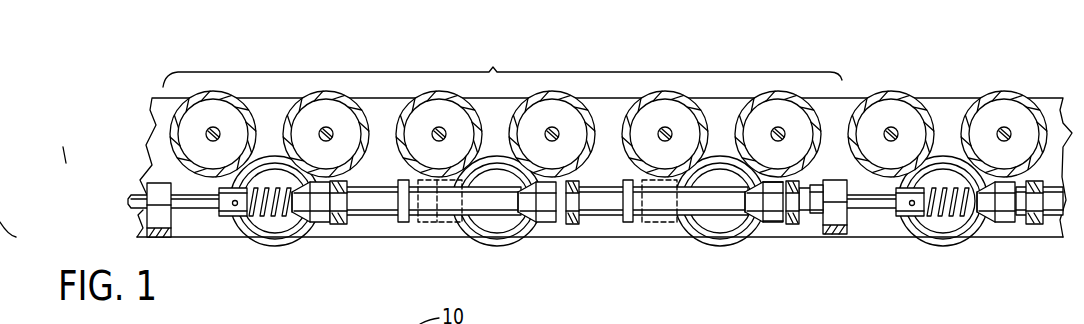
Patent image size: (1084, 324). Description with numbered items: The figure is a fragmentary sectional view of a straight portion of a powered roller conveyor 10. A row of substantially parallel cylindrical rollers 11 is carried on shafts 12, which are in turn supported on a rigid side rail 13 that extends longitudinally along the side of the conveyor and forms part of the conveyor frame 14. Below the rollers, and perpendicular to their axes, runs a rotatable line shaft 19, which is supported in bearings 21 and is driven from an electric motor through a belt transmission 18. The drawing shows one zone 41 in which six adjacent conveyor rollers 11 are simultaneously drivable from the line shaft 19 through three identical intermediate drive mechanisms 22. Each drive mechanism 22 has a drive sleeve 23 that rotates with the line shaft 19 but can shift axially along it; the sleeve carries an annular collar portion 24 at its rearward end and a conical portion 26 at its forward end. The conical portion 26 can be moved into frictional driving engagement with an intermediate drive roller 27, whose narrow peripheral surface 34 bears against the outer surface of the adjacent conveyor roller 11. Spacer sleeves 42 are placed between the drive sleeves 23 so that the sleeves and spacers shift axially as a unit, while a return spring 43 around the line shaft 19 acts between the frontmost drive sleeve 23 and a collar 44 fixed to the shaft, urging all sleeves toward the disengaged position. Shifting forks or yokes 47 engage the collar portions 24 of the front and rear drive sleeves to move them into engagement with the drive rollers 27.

The powered roller conveyor 10 is at (378, 64).
The cylindrical rollers 11 is at (690, 122).
The shafts 12 is at (785, 133).
The side rails 13 is at (267, 118).
The conveyor frame 14 is at (147, 238).
The belt transmission 18 is at (878, 202).
The line shaft 19 is at (185, 203).
The bearings 21 is at (158, 194).
The intermediate drive mechanisms 22 is at (250, 247).
The drive sleeve 23 is at (552, 216).
The annular collar portion 24 is at (814, 206).
The conical portion 26 is at (777, 207).
The intermediate drive roller 27 is at (609, 178).
The narrow peripheral surface 34 is at (717, 153).
The zone 41 is at (608, 110).
The spacer sleeves 42 is at (370, 202).
The return spring 43 is at (278, 215).
The collar 44 is at (227, 207).
The shifting forks or yokes 47 is at (334, 223).